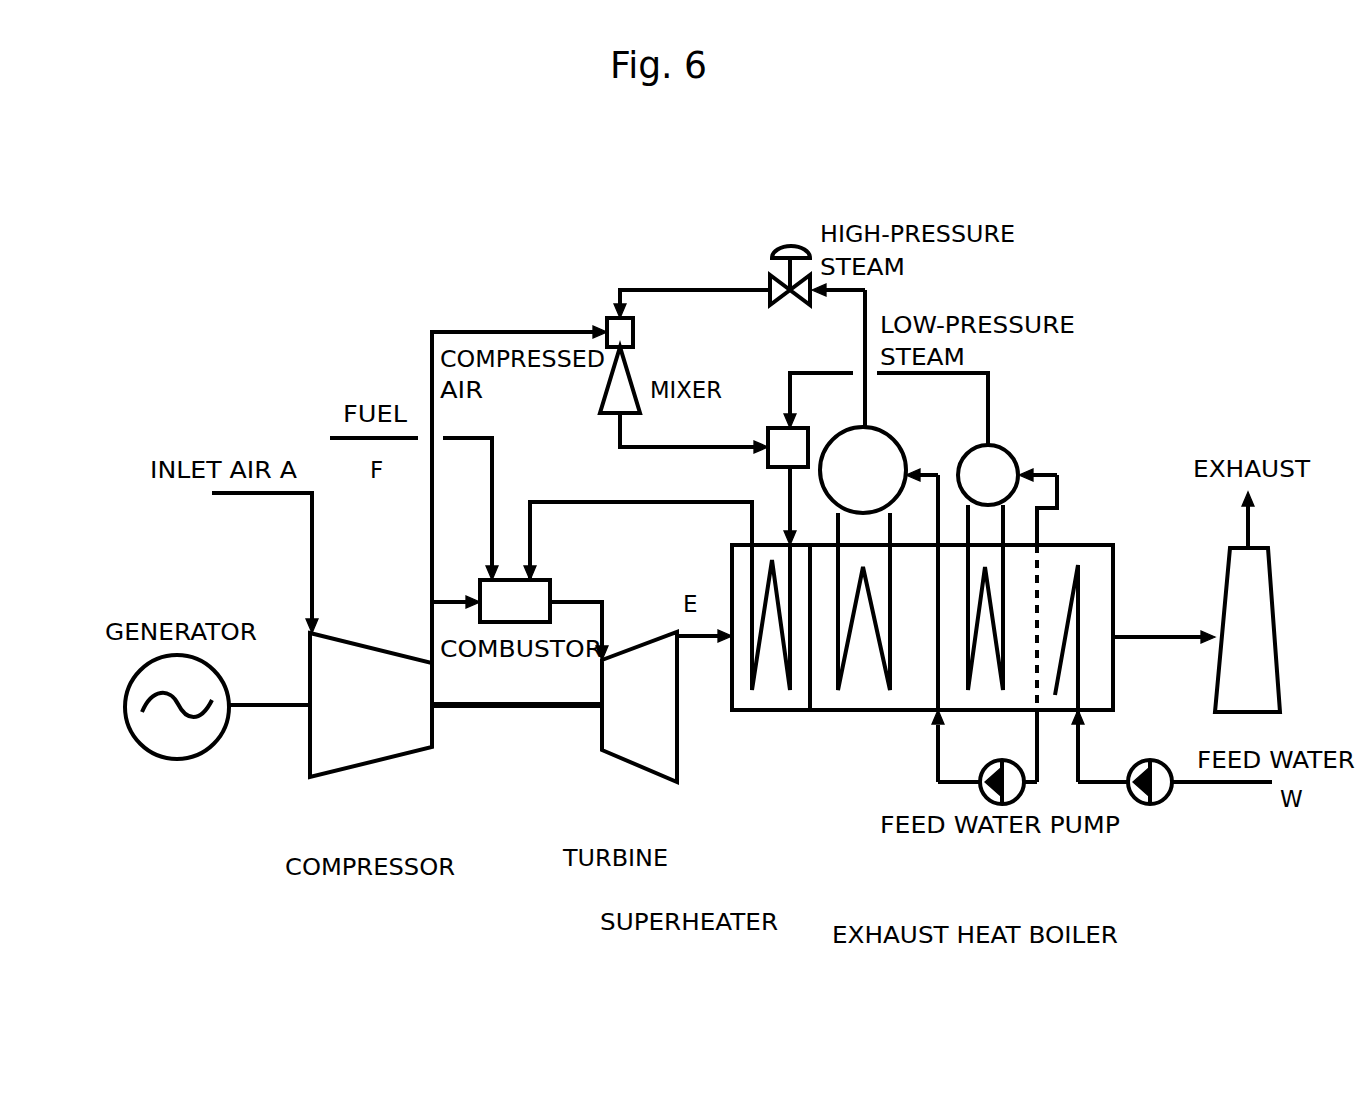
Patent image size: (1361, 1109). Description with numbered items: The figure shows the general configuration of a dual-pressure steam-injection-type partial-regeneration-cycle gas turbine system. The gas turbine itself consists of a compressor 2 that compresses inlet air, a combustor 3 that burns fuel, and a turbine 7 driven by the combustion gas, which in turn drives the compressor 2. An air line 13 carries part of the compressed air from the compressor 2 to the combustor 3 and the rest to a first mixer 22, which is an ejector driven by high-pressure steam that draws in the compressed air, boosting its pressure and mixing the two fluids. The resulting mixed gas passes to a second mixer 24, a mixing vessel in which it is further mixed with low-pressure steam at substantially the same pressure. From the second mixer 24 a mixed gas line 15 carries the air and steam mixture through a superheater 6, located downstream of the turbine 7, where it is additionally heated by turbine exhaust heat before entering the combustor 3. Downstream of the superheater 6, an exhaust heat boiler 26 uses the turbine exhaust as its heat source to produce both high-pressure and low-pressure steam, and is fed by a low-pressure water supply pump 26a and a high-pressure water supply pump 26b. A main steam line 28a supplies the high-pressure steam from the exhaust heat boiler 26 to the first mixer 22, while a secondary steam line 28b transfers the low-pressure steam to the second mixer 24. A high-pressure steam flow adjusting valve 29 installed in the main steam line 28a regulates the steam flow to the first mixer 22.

The compressor 2 is at (358, 745).
The combustor 3 is at (530, 598).
The superheater 6 is at (763, 698).
The turbine 7 is at (640, 742).
The air line 13 is at (425, 352).
The mixed gas line 15 is at (580, 500).
The first mixer 22 is at (592, 308).
The second mixer 24 is at (783, 440).
The exhaust heat boiler 26 is at (848, 698).
The low-pressure water supply pump 26a is at (1159, 797).
The high-pressure water supply pump 26b is at (987, 819).
The main steam line 28a is at (683, 285).
The secondary steam line 28b is at (992, 418).
The high-pressure steam flow adjusting valve 29 is at (795, 242).